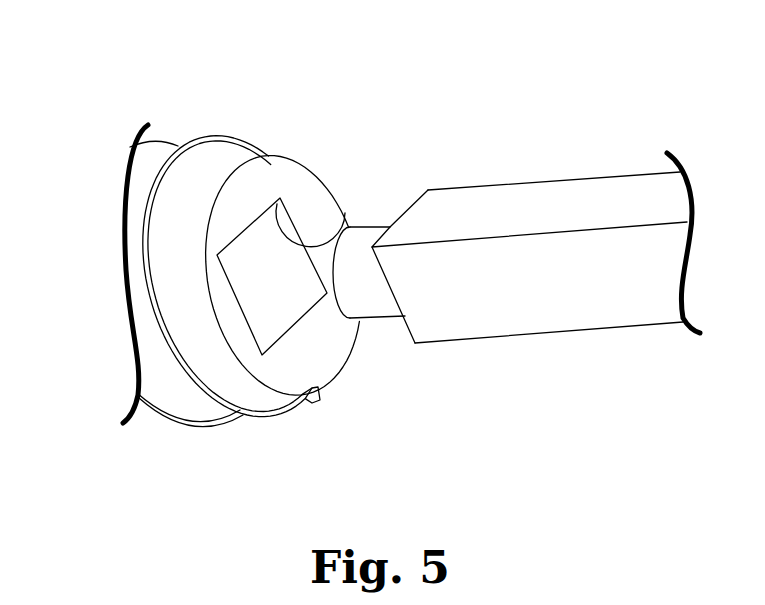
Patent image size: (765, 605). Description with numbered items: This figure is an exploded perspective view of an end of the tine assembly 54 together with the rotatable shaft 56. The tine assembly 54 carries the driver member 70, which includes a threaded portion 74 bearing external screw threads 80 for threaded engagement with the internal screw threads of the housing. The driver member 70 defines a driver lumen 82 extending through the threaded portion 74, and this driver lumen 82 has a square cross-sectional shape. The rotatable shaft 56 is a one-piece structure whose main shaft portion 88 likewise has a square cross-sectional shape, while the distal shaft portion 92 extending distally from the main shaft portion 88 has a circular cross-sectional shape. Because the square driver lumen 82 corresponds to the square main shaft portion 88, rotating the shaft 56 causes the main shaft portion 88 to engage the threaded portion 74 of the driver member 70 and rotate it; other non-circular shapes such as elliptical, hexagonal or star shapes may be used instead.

The tine assembly 54 is at (178, 126).
The rotatable shaft 56 is at (594, 160).
The driver member 70 is at (262, 138).
The threaded portion 74 is at (166, 346).
The external screw threads 80 is at (250, 417).
The driver lumen 82 is at (345, 213).
The main shaft portion 88 is at (575, 331).
The distal shaft portion 92 is at (372, 320).